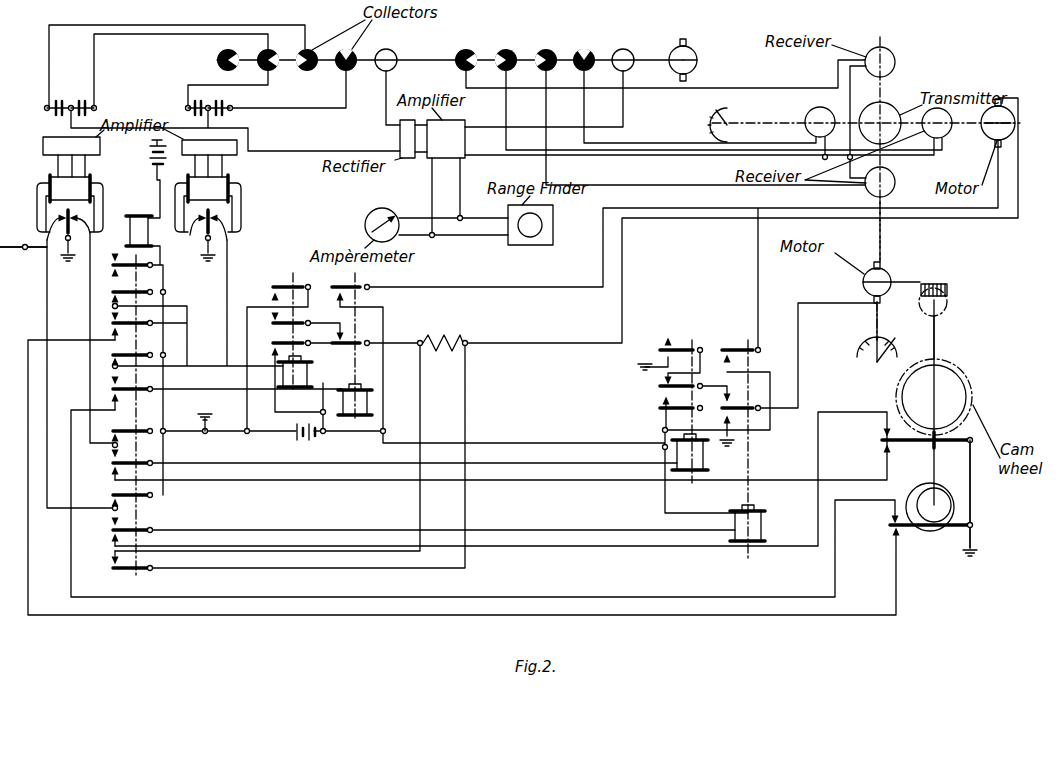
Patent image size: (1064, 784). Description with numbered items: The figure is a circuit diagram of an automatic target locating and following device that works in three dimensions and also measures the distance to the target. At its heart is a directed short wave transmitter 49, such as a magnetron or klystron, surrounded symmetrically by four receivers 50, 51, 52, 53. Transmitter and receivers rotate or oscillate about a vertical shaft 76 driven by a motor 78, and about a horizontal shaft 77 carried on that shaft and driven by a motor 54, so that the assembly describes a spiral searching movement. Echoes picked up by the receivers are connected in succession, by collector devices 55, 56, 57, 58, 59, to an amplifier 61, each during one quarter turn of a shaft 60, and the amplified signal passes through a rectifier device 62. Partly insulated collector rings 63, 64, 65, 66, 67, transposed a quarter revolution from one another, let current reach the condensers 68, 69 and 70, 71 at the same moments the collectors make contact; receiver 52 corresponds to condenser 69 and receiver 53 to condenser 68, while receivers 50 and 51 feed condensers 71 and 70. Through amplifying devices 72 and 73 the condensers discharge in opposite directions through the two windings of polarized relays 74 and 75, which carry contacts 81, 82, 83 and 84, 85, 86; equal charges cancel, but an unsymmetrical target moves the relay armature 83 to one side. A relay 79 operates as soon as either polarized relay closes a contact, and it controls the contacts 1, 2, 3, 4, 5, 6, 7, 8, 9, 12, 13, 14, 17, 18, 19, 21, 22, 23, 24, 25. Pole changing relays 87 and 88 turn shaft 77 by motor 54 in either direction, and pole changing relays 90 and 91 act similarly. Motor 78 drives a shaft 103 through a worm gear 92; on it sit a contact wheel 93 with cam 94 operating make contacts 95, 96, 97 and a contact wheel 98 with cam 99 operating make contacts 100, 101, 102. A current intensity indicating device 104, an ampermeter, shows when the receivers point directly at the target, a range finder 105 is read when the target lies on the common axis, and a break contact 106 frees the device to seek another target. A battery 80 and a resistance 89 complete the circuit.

The contact 1 is at (112, 258).
The contact 2 is at (134, 258).
The contact 3 is at (112, 275).
The contact 4 is at (112, 291).
The contact 5 is at (112, 306).
The contact 6 is at (120, 314).
The contact 7 is at (112, 324).
The contact 8 is at (119, 334).
The contact 9 is at (112, 355).
The contact 12 is at (112, 389).
The contact 13 is at (120, 400).
The contact 14 is at (112, 430).
The contact 17 is at (130, 464).
The contact 18 is at (112, 471).
The contact 19 is at (112, 494).
The contact 21 is at (112, 519).
The contact 22 is at (132, 530).
The contact 23 is at (112, 537).
The contact 24 is at (112, 554).
The contact 25 is at (112, 568).
The directed short wave transmitter 49 is at (896, 112).
The receiver 50 is at (806, 114).
The receiver 51 is at (948, 118).
The receiver 52 is at (899, 58).
The receiver 53 is at (895, 182).
The motor 54 is at (990, 138).
The collector device 55 is at (465, 49).
The collector device 56 is at (505, 49).
The collector device 57 is at (545, 49).
The collector device 58 is at (584, 49).
The collector device 59 is at (623, 49).
The shaft 60 is at (698, 60).
The amplifier 61 is at (446, 139).
The rectifier device 62 is at (399, 141).
The collector ring 63 is at (392, 42).
The collector ring 64 is at (343, 49).
The collector ring 65 is at (312, 71).
The collector ring 66 is at (266, 49).
The collector ring 67 is at (217, 58).
The condenser 68 is at (58, 96).
The condenser 69 is at (83, 96).
The condenser 70 is at (188, 100).
The condenser 71 is at (226, 101).
The amplifying device 72 is at (43, 148).
The amplifying device 73 is at (238, 150).
The polarized relay 74 is at (70, 203).
The polarized relay 75 is at (208, 203).
The vertical shaft 76 is at (882, 232).
The horizontal shaft 77 is at (764, 120).
The motor 78 is at (863, 282).
The relay 79 is at (134, 214).
The battery 80 is at (294, 440).
The contact 81 is at (56, 218).
The contact 82 is at (47, 252).
The relay armature 83 is at (71, 243).
The contact 84 is at (190, 235).
The contact 85 is at (217, 250).
The contact 86 is at (228, 232).
The pole changing relay 87 is at (306, 370).
The pole changing relay 88 is at (360, 390).
The resistance 89 is at (452, 343).
The pole changing relay 90 is at (703, 460).
The pole changing relay 91 is at (761, 526).
The worm gear 92 is at (948, 296).
The contact wheel 93 is at (962, 372).
The cam 94 is at (978, 488).
The make contact 95 is at (926, 443).
The make contact 96 is at (883, 450).
The make contact 97 is at (883, 430).
The contact wheel 98 is at (940, 488).
The cam 99 is at (955, 505).
The make contact 100 is at (920, 530).
The make contact 101 is at (890, 519).
The make contact 102 is at (892, 535).
The shaft 103 is at (936, 334).
The current intensity indicating device 104 is at (370, 214).
The range finder 105 is at (510, 246).
The break contact 106 is at (25, 246).